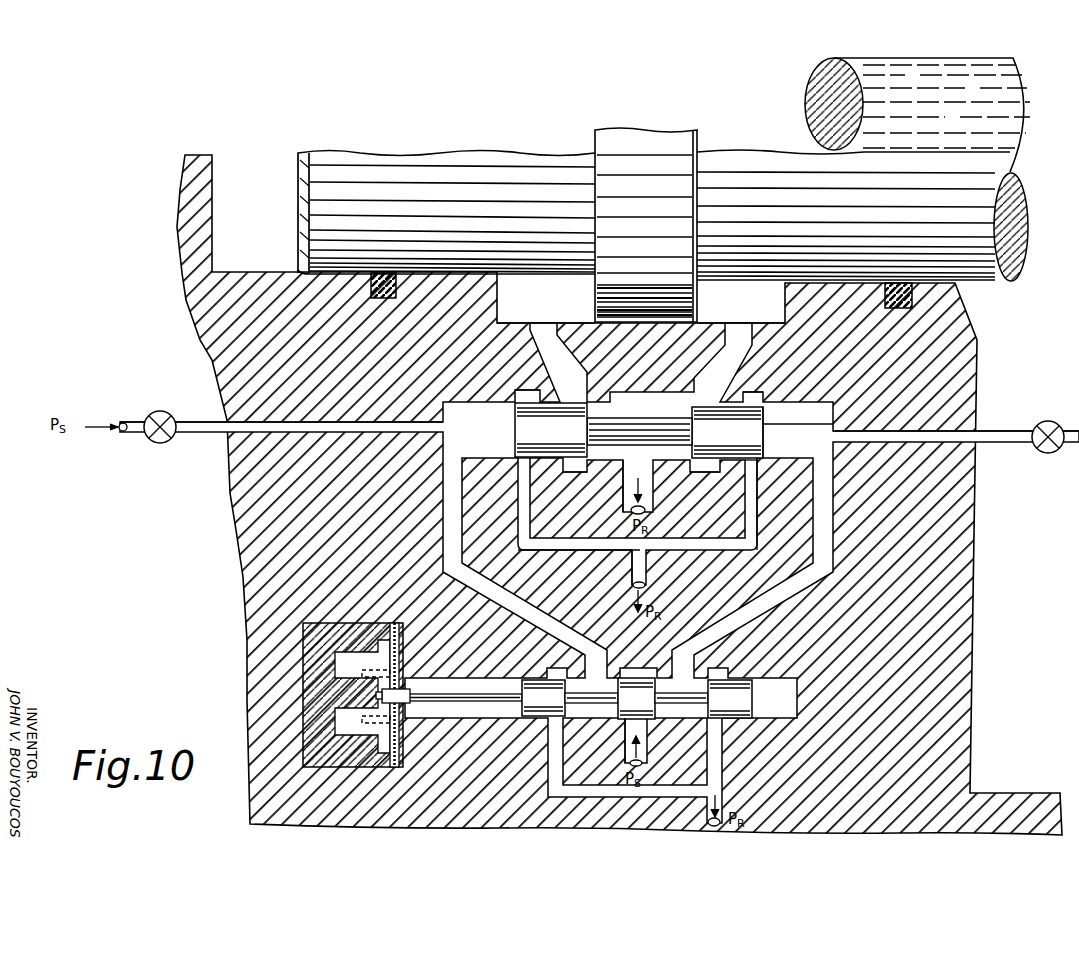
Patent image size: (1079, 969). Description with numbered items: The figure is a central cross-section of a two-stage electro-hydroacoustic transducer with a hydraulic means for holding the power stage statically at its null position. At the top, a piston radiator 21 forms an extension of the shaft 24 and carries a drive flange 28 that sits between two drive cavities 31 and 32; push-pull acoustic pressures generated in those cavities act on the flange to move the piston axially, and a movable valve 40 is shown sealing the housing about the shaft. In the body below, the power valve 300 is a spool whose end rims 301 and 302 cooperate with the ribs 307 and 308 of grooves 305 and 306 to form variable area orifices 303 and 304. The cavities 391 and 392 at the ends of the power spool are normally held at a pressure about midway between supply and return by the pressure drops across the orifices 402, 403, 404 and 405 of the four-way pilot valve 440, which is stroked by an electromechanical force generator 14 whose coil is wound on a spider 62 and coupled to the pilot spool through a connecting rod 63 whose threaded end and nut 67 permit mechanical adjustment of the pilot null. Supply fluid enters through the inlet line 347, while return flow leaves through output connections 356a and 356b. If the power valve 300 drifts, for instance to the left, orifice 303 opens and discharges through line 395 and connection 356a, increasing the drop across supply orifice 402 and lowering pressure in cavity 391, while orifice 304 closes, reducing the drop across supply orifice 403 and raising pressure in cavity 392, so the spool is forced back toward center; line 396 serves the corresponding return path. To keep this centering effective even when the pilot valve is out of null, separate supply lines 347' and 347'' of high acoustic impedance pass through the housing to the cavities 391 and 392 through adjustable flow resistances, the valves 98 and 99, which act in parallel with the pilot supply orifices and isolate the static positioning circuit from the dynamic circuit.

The electromechanical force generator 14 is at (374, 711).
The piston radiator 21 is at (710, 137).
The shaft 24 is at (459, 155).
The drive flange 28 is at (652, 234).
The drive cavity 31 is at (751, 301).
The drive cavity 32 is at (553, 301).
The movable valve 40 is at (368, 290).
The spider 62 is at (398, 713).
The connecting rod 63 is at (455, 693).
The nut 67 is at (403, 677).
The adjustable flow resistance valve 98 is at (1048, 421).
The adjustable flow resistance valve 99 is at (162, 411).
The power valve 300 is at (752, 439).
The end rim 301 is at (766, 412).
The end rim 302 is at (515, 414).
The variable area orifice 303 is at (765, 461).
The variable area orifice 304 is at (514, 461).
The groove 305 is at (757, 465).
The groove 306 is at (522, 466).
The rib 307 is at (765, 397).
The rib 308 is at (515, 396).
The inlet line 347 is at (662, 740).
The supply line 347' is at (956, 464).
The supply line 347'' is at (281, 453).
The output connection 356a is at (648, 568).
The output connection 356b is at (655, 496).
The cavity 391 is at (815, 443).
The cavity 392 is at (503, 443).
The return line 395 is at (758, 517).
The return line 396 is at (568, 547).
The supply orifice 402 is at (655, 719).
The supply orifice 403 is at (610, 719).
The orifice 404 is at (710, 682).
The orifice 405 is at (567, 682).
The pilot valve 440 is at (745, 707).